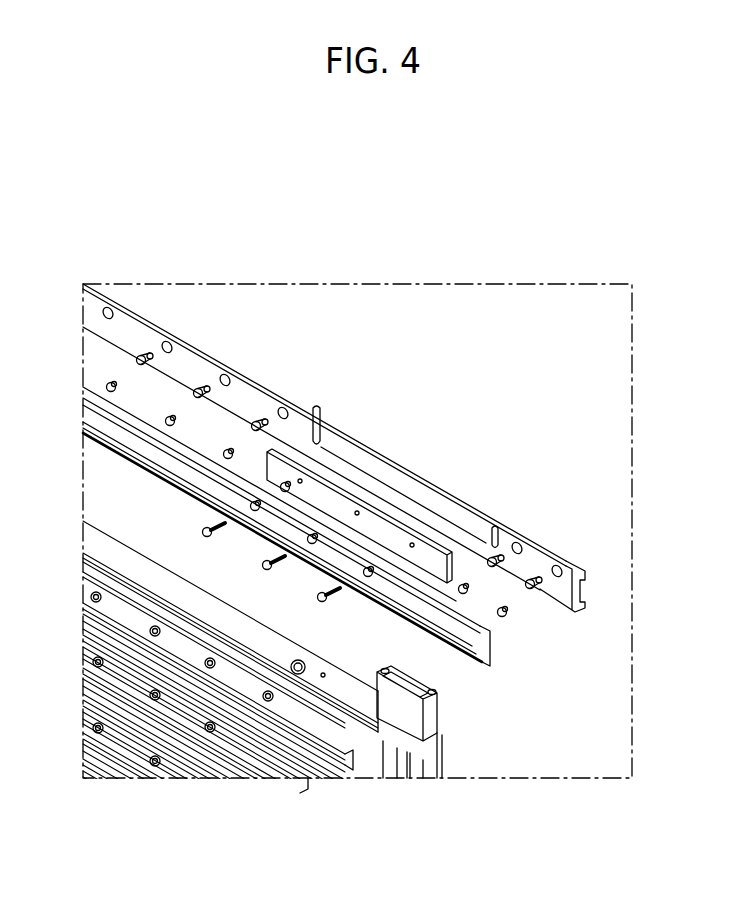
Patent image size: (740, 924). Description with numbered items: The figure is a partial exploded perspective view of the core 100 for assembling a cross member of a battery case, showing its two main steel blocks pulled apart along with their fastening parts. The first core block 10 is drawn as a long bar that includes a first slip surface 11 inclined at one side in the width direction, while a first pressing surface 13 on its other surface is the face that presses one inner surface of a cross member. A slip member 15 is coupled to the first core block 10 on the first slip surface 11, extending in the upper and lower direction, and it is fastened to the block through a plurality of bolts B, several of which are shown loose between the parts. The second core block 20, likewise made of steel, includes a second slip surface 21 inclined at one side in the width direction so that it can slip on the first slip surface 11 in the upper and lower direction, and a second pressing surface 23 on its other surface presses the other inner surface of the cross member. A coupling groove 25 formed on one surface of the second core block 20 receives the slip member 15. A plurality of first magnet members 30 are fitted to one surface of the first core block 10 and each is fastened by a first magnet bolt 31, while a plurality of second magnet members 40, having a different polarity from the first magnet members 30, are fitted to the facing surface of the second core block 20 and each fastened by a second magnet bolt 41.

The core for assembling a cross member of a battery case 100 is at (379, 254).
The first core block 10 is at (138, 474).
The first slip surface 11 is at (453, 573).
The first pressing surface 13 is at (455, 625).
The slip member 15 is at (395, 510).
The second core block 20 is at (388, 448).
The second slip surface 21 is at (352, 445).
The second pressing surface 23 is at (586, 572).
The coupling groove 25 is at (318, 416).
The first magnet member 30 is at (520, 625).
The first magnet bolt 31 is at (502, 620).
The second magnet member 40 is at (545, 600).
The second magnet bolt 41 is at (540, 578).
The bolt B is at (203, 532).